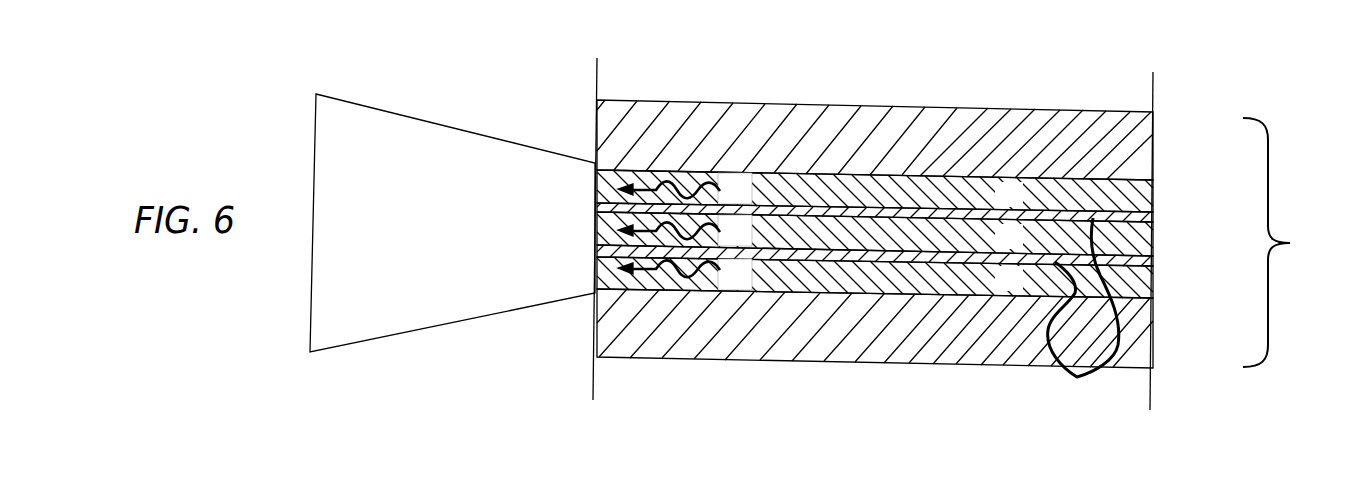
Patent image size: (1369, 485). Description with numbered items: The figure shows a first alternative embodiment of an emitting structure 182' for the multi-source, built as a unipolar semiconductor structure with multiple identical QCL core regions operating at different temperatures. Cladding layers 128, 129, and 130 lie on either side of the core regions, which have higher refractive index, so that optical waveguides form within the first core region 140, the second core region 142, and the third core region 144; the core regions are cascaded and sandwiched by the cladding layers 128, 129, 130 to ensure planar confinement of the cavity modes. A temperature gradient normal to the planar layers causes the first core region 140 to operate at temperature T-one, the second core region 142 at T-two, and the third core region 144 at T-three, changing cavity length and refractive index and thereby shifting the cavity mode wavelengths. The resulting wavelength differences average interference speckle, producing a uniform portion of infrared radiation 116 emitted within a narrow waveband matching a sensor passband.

The infrared radiation 116 is at (391, 233).
The cladding layer 128 is at (838, 105).
The cladding layer 130 is at (754, 338).
The first core region 140 is at (1154, 200).
The second core region 142 is at (1154, 242).
The third core region 144 is at (1154, 282).
The cladding layer 129 is at (1083, 310).
The emitting structure 182' is at (1290, 242).